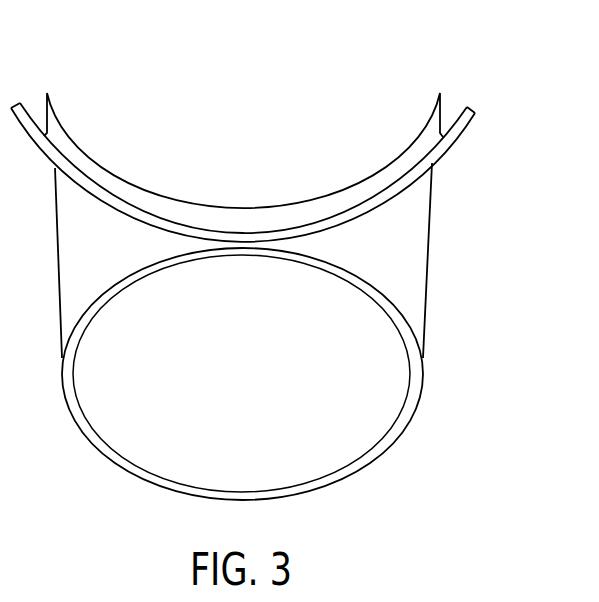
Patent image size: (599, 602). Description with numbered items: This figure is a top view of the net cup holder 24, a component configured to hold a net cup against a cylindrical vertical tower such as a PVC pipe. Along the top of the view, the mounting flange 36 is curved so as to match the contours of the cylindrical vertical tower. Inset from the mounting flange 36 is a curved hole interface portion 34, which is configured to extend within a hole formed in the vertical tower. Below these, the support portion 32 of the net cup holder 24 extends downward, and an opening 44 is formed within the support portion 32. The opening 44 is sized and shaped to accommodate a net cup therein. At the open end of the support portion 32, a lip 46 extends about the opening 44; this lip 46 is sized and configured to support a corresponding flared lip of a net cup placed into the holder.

The net cup holder 24 is at (276, 306).
The support portion 32 is at (410, 248).
The hole interface portion 34 is at (243, 217).
The mounting flange 36 is at (463, 122).
The opening 44 is at (147, 433).
The lip 46 is at (385, 311).